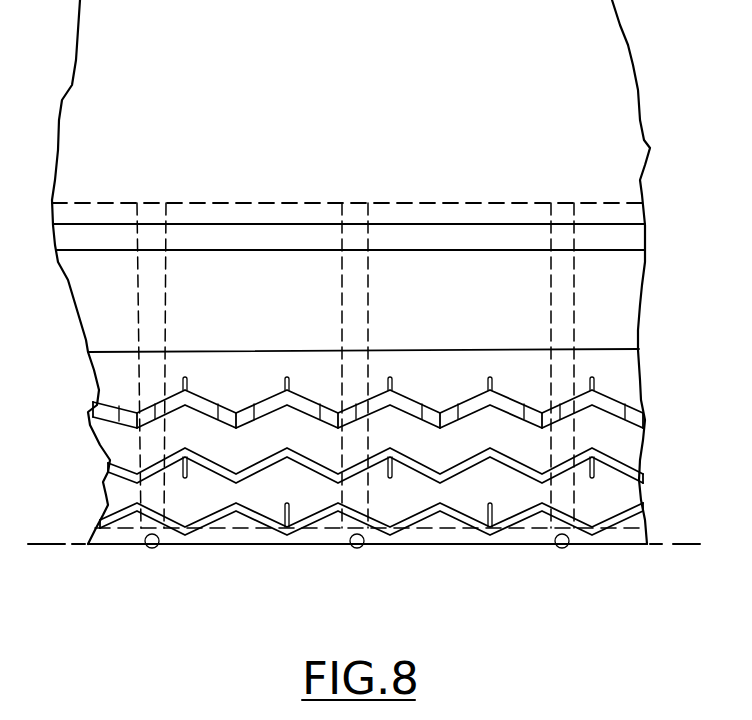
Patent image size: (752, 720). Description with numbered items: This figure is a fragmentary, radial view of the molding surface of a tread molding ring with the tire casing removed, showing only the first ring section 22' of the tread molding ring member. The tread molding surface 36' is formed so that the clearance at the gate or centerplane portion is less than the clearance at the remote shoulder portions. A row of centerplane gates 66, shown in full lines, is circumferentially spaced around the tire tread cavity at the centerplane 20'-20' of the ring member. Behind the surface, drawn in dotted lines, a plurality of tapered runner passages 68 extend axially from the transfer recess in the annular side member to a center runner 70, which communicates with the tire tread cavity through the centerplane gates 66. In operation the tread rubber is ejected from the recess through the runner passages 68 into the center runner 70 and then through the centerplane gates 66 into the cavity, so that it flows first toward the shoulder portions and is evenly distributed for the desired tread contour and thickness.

The centerplane 20' is at (367, 576).
The first ring section 22' is at (376, 272).
The tread molding surface 36' is at (395, 430).
The centerplane gates 66 is at (152, 548).
The tapered runner passages 68 is at (157, 282).
The center runner 70 is at (657, 532).